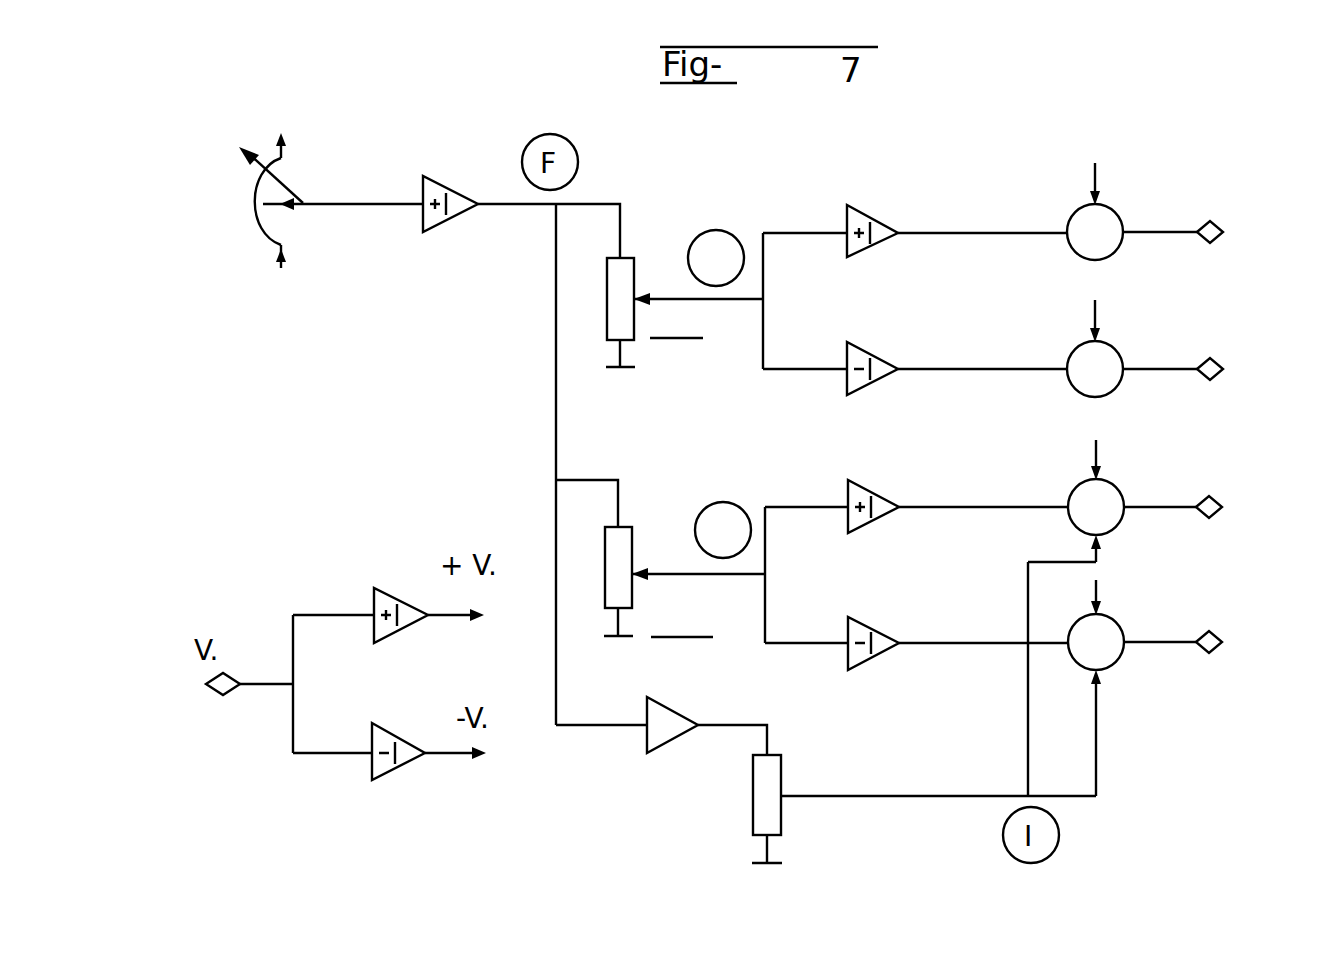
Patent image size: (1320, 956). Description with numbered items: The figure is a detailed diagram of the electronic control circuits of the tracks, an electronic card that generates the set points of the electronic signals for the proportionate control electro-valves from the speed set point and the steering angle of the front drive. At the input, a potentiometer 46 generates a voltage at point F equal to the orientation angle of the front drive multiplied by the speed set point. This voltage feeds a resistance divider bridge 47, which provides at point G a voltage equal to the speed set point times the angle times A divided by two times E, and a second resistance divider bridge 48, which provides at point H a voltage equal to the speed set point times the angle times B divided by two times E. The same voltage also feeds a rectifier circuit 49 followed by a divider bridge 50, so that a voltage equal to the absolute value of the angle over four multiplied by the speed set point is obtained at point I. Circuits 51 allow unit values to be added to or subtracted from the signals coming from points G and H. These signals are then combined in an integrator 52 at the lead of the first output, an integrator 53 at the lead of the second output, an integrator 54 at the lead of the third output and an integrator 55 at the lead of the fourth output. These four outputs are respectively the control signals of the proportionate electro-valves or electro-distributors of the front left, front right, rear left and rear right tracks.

The potentiometer 46 is at (308, 203).
The resistance divider bridge 47 is at (684, 293).
The resistance divider bridge 48 is at (660, 576).
The rectifier circuit 49 is at (661, 736).
The divider bridge 50 is at (773, 809).
The circuits 51 is at (915, 437).
The integrator 52 is at (1163, 203).
The integrator 53 is at (1158, 343).
The integrator 54 is at (1161, 484).
The integrator 55 is at (1171, 682).